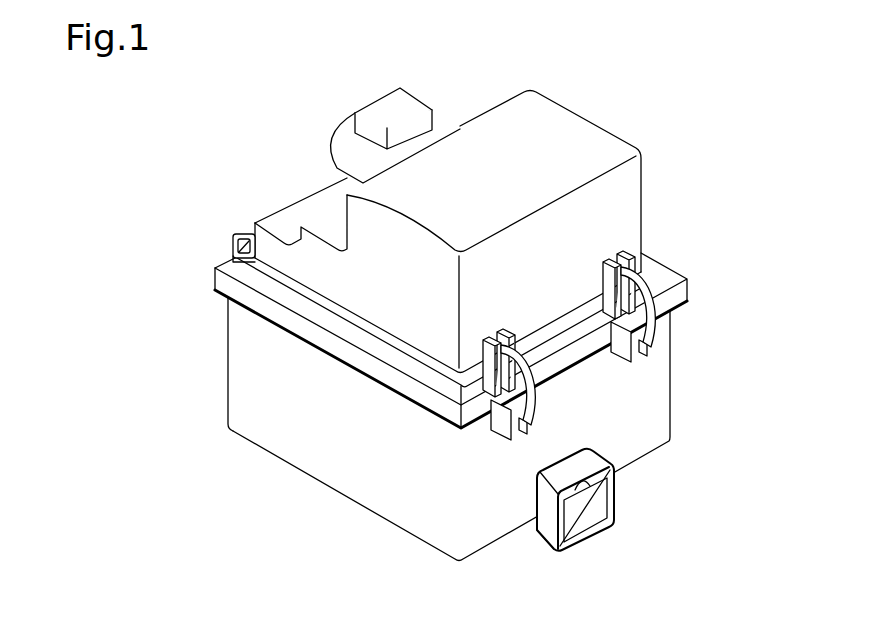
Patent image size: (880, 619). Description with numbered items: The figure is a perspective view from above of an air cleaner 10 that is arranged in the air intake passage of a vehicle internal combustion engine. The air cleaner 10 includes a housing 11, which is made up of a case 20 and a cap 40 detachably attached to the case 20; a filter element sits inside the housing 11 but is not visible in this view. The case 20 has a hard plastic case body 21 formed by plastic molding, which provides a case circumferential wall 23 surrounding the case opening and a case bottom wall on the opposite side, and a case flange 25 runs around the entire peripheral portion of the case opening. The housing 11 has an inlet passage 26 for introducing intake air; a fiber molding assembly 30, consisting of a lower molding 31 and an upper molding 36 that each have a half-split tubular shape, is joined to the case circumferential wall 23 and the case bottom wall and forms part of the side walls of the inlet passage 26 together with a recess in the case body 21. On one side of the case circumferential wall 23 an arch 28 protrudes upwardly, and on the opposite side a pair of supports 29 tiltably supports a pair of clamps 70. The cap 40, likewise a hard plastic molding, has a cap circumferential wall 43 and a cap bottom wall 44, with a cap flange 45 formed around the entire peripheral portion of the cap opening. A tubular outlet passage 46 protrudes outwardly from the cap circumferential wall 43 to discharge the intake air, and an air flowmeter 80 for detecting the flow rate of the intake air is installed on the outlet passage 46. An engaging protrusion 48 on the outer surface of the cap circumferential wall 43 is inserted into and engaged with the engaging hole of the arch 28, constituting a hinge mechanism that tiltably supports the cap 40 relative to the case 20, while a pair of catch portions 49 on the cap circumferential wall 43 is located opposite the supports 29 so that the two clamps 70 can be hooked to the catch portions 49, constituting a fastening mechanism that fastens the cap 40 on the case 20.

The air cleaner 10 is at (675, 104).
The housing 11 is at (474, 334).
The case 20 is at (251, 463).
The case body 21 is at (378, 517).
The case circumferential wall 23 is at (247, 382).
The case flange 25 is at (365, 370).
The inlet passage 26 is at (594, 540).
The arch 28 is at (235, 253).
The support 29 is at (523, 437).
The fiber molding assembly 30 is at (670, 467).
The lower molding 31 is at (613, 502).
The upper molding 36 is at (613, 472).
The cap 40 is at (664, 153).
The cap circumferential wall 43 is at (397, 242).
The cap bottom wall 44 is at (569, 121).
The cap flange 45 is at (337, 333).
The outlet passage 46 is at (347, 150).
The engaging protrusion 48 is at (243, 233).
The catch portion 49 is at (500, 333).
The clamp 70 is at (537, 390).
The air flowmeter 80 is at (388, 108).